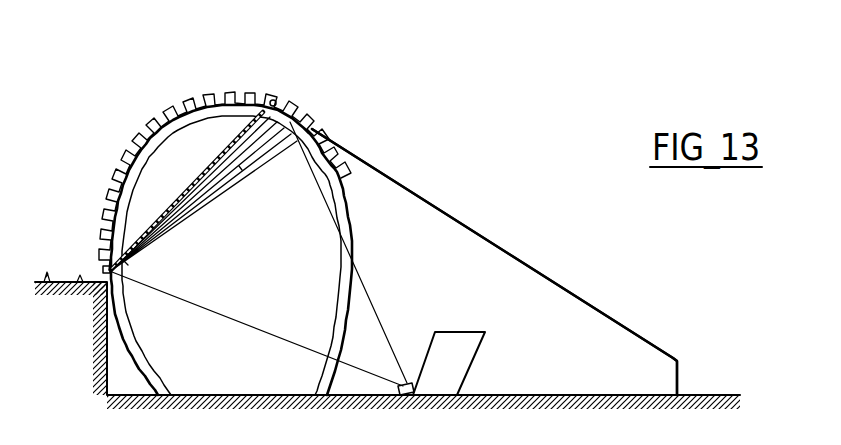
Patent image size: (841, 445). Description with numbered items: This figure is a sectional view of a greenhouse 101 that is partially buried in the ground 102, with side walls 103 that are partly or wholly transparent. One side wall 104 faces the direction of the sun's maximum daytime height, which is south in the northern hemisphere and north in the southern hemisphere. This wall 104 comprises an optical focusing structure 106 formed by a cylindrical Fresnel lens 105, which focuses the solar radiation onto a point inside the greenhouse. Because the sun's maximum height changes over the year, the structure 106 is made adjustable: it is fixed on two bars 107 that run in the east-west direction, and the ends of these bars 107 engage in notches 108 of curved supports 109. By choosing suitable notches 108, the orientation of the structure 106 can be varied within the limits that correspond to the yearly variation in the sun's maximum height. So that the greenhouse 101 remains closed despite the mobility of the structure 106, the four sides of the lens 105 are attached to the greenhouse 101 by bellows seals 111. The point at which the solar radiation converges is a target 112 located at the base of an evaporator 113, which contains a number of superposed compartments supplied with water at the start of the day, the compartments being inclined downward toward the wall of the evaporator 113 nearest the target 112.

The greenhouse 101 is at (571, 295).
The ground 102 is at (75, 367).
The side walls 103 is at (468, 258).
The side wall 104 is at (214, 204).
The cylindrical Fresnel lens 105 is at (193, 184).
The optical focusing structure 106 is at (207, 160).
The bars 107 is at (102, 267).
The notches 108 is at (244, 93).
The curved supports 109 is at (167, 103).
The bellows seals 111 is at (306, 130).
The target 112 is at (408, 378).
The evaporator 113 is at (473, 359).